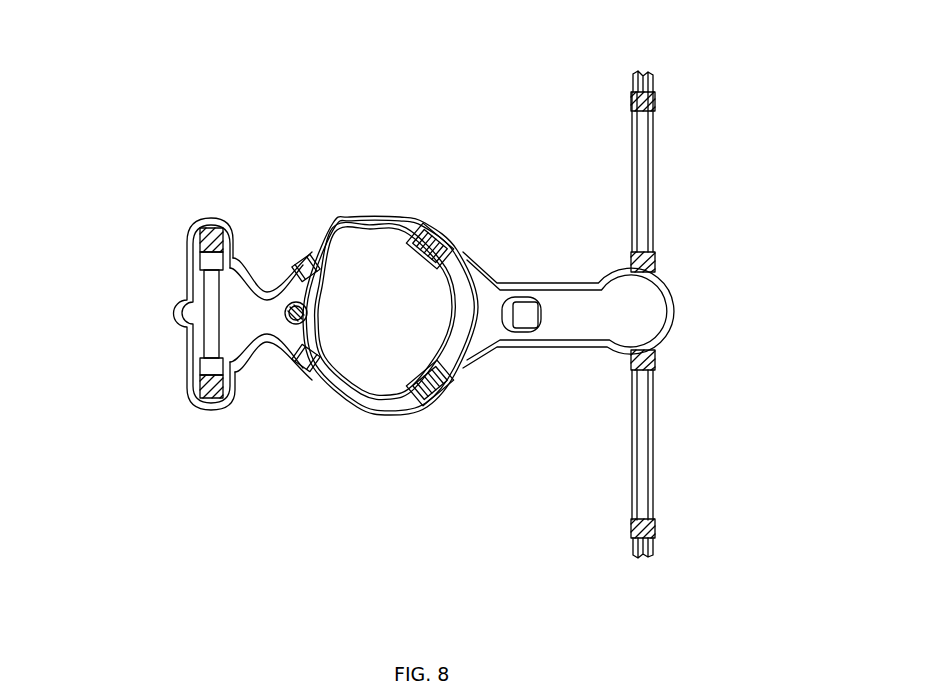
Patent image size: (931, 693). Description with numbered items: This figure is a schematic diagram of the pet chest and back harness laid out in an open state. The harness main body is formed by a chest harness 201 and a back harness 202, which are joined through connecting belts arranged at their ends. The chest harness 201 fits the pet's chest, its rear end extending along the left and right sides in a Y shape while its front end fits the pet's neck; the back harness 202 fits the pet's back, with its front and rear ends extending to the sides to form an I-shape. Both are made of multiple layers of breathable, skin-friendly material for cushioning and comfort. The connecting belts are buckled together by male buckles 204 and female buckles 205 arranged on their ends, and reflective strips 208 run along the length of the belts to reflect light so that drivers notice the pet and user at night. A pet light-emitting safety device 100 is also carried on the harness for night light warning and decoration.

The pet light-emitting safety device 100 is at (297, 305).
The chest harness 201 is at (637, 317).
The back harness 202 is at (244, 316).
The male buckle 204 is at (652, 92).
The female buckle 205 is at (205, 232).
The reflective strip 208 is at (363, 226).